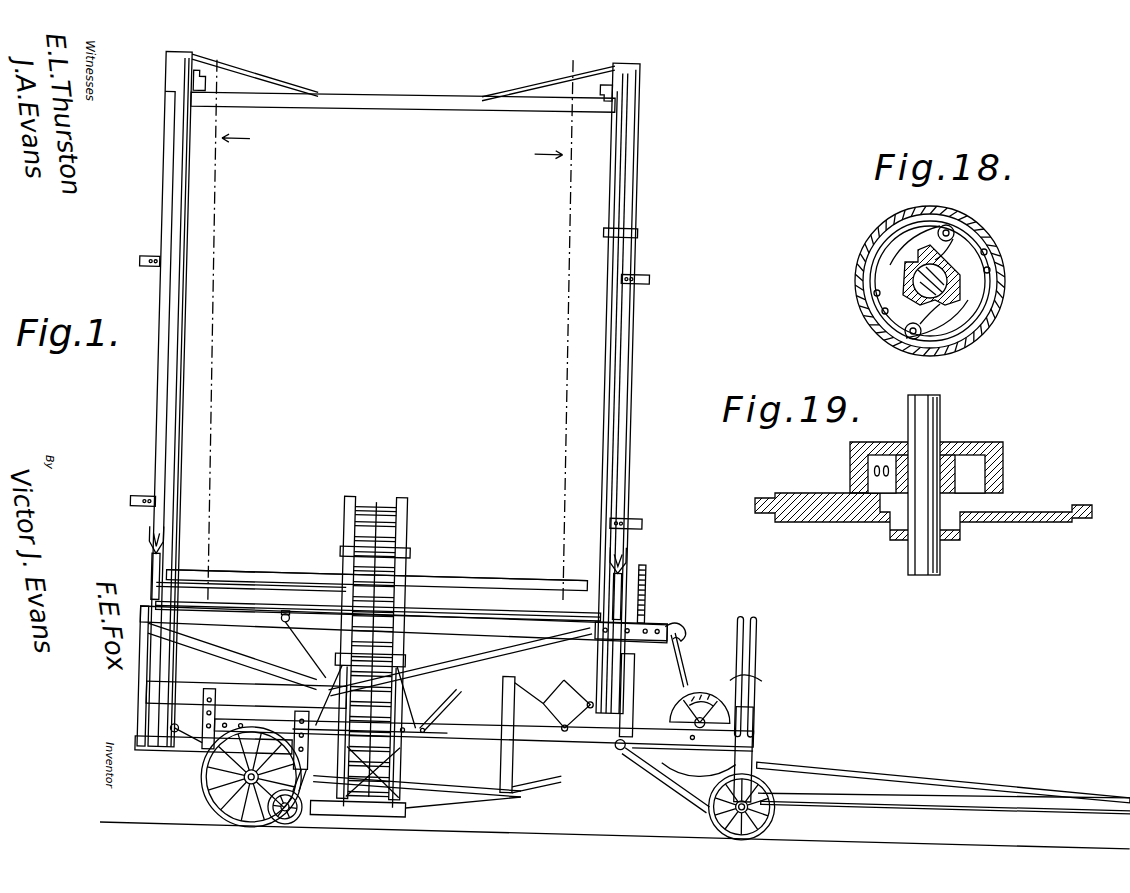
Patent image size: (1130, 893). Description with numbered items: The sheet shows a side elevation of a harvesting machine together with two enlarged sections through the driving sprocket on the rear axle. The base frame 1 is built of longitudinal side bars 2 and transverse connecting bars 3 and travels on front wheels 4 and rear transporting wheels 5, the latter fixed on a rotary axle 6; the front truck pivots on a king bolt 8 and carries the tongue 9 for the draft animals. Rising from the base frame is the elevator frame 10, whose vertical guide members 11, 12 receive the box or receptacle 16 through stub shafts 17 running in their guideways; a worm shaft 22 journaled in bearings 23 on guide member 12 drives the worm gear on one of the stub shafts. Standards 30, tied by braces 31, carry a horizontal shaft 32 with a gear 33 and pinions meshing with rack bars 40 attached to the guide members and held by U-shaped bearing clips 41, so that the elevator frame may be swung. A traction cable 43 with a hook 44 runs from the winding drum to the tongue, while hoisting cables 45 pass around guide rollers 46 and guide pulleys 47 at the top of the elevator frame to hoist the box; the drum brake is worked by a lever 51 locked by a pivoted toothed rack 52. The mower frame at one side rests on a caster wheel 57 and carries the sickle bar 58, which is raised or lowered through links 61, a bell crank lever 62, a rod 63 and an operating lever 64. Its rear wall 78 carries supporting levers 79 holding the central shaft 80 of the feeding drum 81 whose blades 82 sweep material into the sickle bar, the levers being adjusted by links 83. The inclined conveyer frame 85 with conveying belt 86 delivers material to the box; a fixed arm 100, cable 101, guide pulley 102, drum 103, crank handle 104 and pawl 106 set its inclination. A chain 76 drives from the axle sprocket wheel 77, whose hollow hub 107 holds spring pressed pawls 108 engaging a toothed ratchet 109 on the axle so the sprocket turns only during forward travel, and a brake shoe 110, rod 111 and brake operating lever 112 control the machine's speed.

In FIG. 1, the base frame 1 is at (632, 734).
In FIG. 1, the longitudinal side bars 2 is at (505, 668).
In FIG. 1, the transverse connecting bars 3 is at (386, 491).
In FIG. 1, the front wheels 4 is at (776, 796).
In FIG. 1, the rear transporting wheels 5 is at (200, 773).
In FIG. 1, the rotary shaft or axle 6 is at (205, 780).
In FIG. 18, the rotary shaft or axle 6 is at (946, 279).
In FIG. 19, the rotary shaft or axle 6 is at (942, 425).
In FIG. 1, the king bolt 8 is at (548, 800).
In FIG. 1, the tongue or pole 9 is at (905, 772).
In FIG. 1, the elevator frame 10 is at (620, 440).
In FIG. 1, the guide member 11 is at (146, 190).
In FIG. 1, the guide member 12 is at (620, 382).
In FIG. 1, the box or receptacle 16 is at (497, 568).
In FIG. 1, the stub shafts 17 is at (396, 88).
In FIG. 1, the worm shaft 22 is at (620, 322).
In FIG. 1, the bearings 23 is at (622, 218).
In FIG. 1, the standards 30 is at (135, 600).
In FIG. 1, the braces 31 is at (238, 582).
In FIG. 1, the horizontal shaft 32 is at (440, 568).
In FIG. 1, the gear 33 is at (640, 570).
In FIG. 1, the rack bars 40 is at (158, 545).
In FIG. 1, the U-shaped bearing clips 41 is at (145, 560).
In FIG. 1, the traction cable 43 is at (805, 750).
In FIG. 1, the hook 44 is at (1104, 760).
In FIG. 1, the hoisting cables 45 is at (165, 375).
In FIG. 1, the guide rollers 46 is at (616, 740).
In FIG. 1, the guide pulleys 47 is at (242, 74).
In FIG. 1, the lever 51 is at (748, 640).
In FIG. 1, the pivoted toothed rack 52 is at (698, 682).
In FIG. 1, the caster wheel 57 is at (266, 800).
In FIG. 1, the sickle bar 58 is at (480, 785).
In FIG. 1, the links 61 is at (556, 740).
In FIG. 1, the bell crank lever 62 is at (558, 670).
In FIG. 1, the rod 63 is at (630, 660).
In FIG. 1, the operating lever 64 is at (668, 700).
In FIG. 1, the chain 76 is at (200, 740).
In FIG. 19, the sprocket wheel 77 is at (1000, 525).
In FIG. 1, the rear wall 78 is at (300, 716).
In FIG. 1, the supporting levers 79 is at (380, 740).
In FIG. 1, the central shaft 80 is at (385, 690).
In FIG. 1, the rotary feeding drum 81 is at (495, 786).
In FIG. 1, the blades 82 is at (445, 680).
In FIG. 1, the links 83 is at (245, 726).
In FIG. 1, the conveyer frame 85 is at (338, 496).
In FIG. 1, the conveying belt 86 is at (392, 510).
In FIG. 1, the fixed arm 100 is at (412, 625).
In FIG. 1, the cable 101 is at (505, 614).
In FIG. 1, the guide pulley 102 is at (282, 608).
In FIG. 1, the drum 103 is at (660, 612).
In FIG. 1, the crank handle 104 is at (682, 640).
In FIG. 1, the pawl 106 is at (678, 616).
In FIG. 18, the hollow hub 107 is at (858, 288).
In FIG. 19, the hollow hub 107 is at (1005, 470).
In FIG. 18, the spring pressed pawls 108 is at (905, 218).
In FIG. 18, the toothed ratchet 109 is at (960, 256).
In FIG. 19, the toothed ratchet 109 is at (990, 460).
In FIG. 1, the brake shoe 110 is at (186, 722).
In FIG. 1, the rod 111 is at (455, 714).
In FIG. 1, the brake operating lever 112 is at (754, 662).